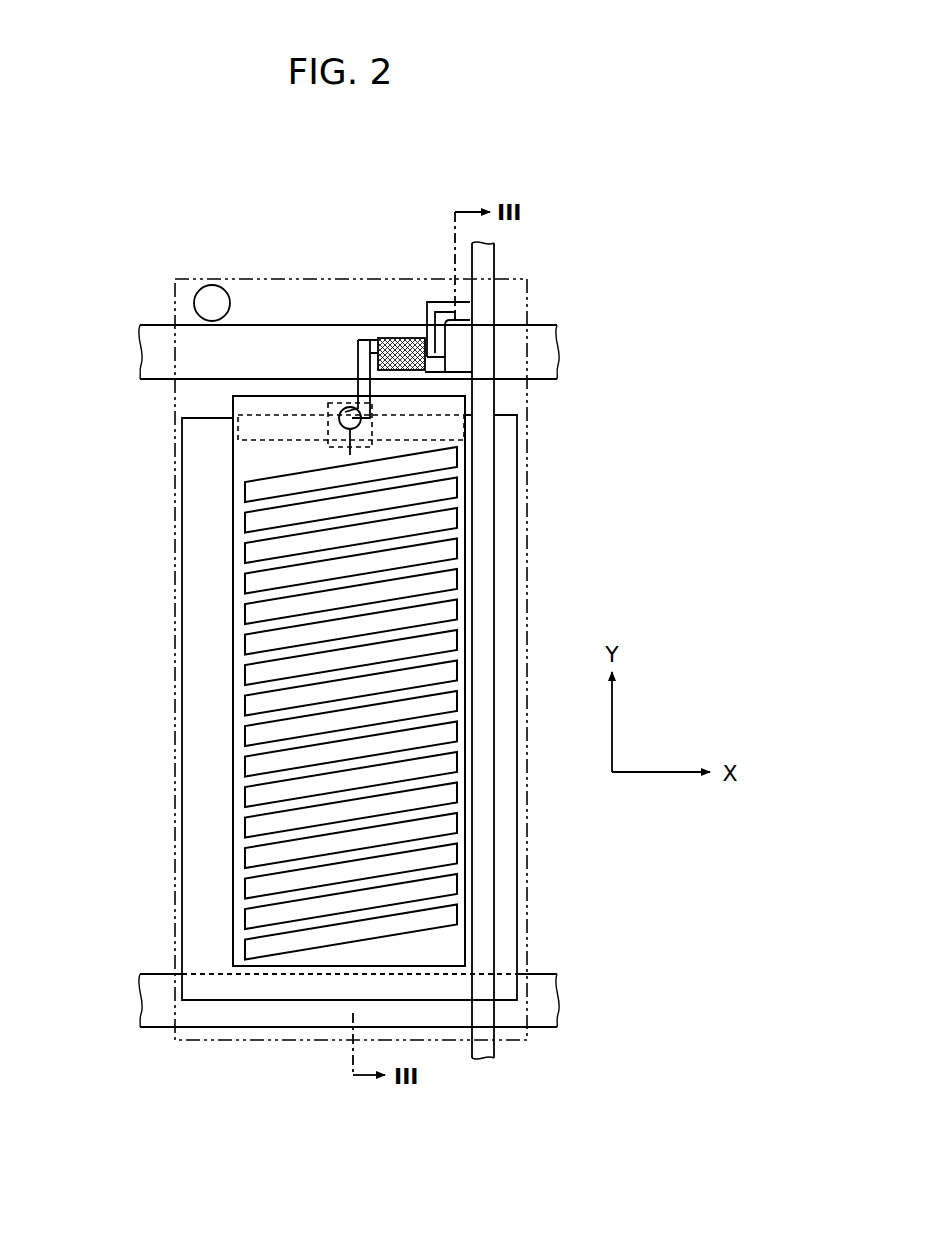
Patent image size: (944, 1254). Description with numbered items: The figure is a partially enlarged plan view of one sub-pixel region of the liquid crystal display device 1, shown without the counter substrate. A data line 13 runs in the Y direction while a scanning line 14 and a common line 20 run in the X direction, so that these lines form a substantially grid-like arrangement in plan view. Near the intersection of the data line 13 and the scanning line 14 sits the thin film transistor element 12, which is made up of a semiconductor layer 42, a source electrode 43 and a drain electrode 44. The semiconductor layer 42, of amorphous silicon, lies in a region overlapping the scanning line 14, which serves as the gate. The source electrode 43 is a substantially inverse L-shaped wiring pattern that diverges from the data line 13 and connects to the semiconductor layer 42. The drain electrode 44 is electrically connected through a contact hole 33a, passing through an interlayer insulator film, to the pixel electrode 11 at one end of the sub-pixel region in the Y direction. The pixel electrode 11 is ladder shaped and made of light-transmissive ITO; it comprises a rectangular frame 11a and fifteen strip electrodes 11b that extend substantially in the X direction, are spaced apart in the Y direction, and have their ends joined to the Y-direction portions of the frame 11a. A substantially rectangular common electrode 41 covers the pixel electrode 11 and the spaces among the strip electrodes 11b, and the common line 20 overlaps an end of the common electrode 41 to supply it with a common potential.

The liquid crystal display device 1 is at (569, 175).
The pixel electrode 11 is at (251, 681).
The frame 11a is at (258, 462).
The strip electrodes 11b is at (297, 623).
The thin film transistor element 12 is at (392, 296).
The data line 13 is at (484, 1012).
The scanning line 14 is at (148, 348).
The common line 20 is at (153, 998).
The contact hole 33a is at (344, 409).
The common electrode 41 is at (205, 726).
The semiconductor layer 42 is at (397, 337).
The source electrode 43 is at (436, 295).
The drain electrode 44 is at (358, 348).